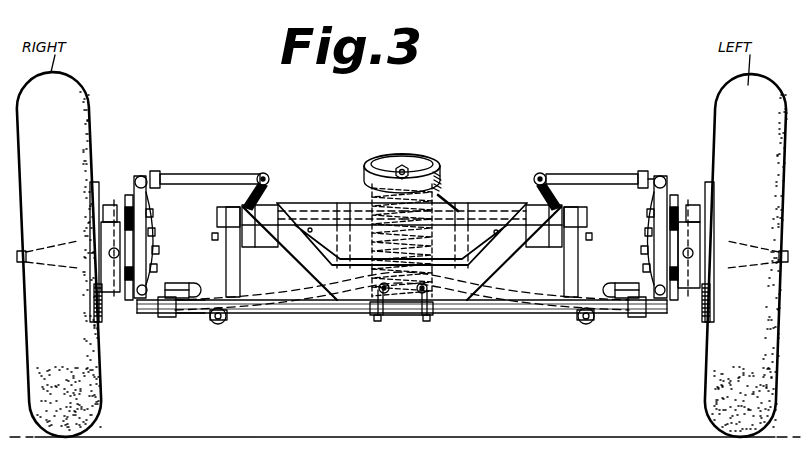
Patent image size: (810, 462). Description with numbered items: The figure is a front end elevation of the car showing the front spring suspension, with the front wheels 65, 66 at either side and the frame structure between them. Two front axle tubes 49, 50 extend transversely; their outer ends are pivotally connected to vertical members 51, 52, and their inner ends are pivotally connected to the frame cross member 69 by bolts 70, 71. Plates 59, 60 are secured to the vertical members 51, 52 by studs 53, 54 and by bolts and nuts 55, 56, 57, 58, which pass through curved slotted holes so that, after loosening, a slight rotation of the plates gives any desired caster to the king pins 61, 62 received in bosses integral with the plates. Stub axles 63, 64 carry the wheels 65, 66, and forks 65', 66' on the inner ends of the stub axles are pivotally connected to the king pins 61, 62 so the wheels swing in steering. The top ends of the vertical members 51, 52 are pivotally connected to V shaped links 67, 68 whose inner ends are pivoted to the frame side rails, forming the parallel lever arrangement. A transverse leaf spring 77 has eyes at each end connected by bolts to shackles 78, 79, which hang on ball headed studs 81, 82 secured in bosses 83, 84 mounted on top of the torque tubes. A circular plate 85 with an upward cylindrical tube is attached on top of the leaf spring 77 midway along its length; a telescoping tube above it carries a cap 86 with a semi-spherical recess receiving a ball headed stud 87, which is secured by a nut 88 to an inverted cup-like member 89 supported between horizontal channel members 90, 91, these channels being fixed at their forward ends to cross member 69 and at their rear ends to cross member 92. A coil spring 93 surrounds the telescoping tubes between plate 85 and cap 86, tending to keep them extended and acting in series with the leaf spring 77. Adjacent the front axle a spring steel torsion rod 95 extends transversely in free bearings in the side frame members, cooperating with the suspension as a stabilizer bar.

The front axle tube 49 is at (198, 314).
The front axle tube 50 is at (615, 314).
The vertical member 51 is at (645, 231).
The vertical member 52 is at (156, 231).
The stud 53 is at (643, 249).
The stud 54 is at (160, 250).
The bolt and nut 55 is at (646, 212).
The bolt and nut 56 is at (646, 267).
The bolt and nut 57 is at (155, 212).
The bolt and nut 58 is at (158, 269).
The plate 59 is at (662, 203).
The plate 60 is at (131, 200).
The king pin 61 is at (690, 220).
The king pin 62 is at (113, 217).
The stub axle 63 is at (738, 243).
The stub axle 64 is at (58, 249).
The front wheel 65 is at (735, 255).
The fork 65' is at (693, 263).
The front wheel 66 is at (58, 255).
The fork 66' is at (119, 263).
The V shaped link 67 is at (593, 176).
The V shaped link 68 is at (203, 174).
The cross member 69 is at (503, 247).
The bolt 70 is at (441, 313).
The bolt 71 is at (389, 319).
The transverse leaf spring 77 is at (493, 311).
The shackle 78 is at (592, 324).
The shackle 79 is at (218, 324).
The ball headed stud 81 is at (612, 295).
The ball headed stud 82 is at (200, 290).
The boss 83 is at (622, 283).
The boss 84 is at (182, 283).
The circular plate 85 is at (352, 312).
The cap 86 is at (369, 203).
The ball headed stud 87 is at (406, 162).
The nut 88 is at (418, 172).
The inverted cup-like member 89 is at (441, 190).
The horizontal channel member 90 is at (341, 208).
The horizontal channel member 91 is at (470, 207).
The cross member 92 is at (508, 203).
The coil spring 93 is at (369, 250).
The torsion rod 95 is at (306, 205).